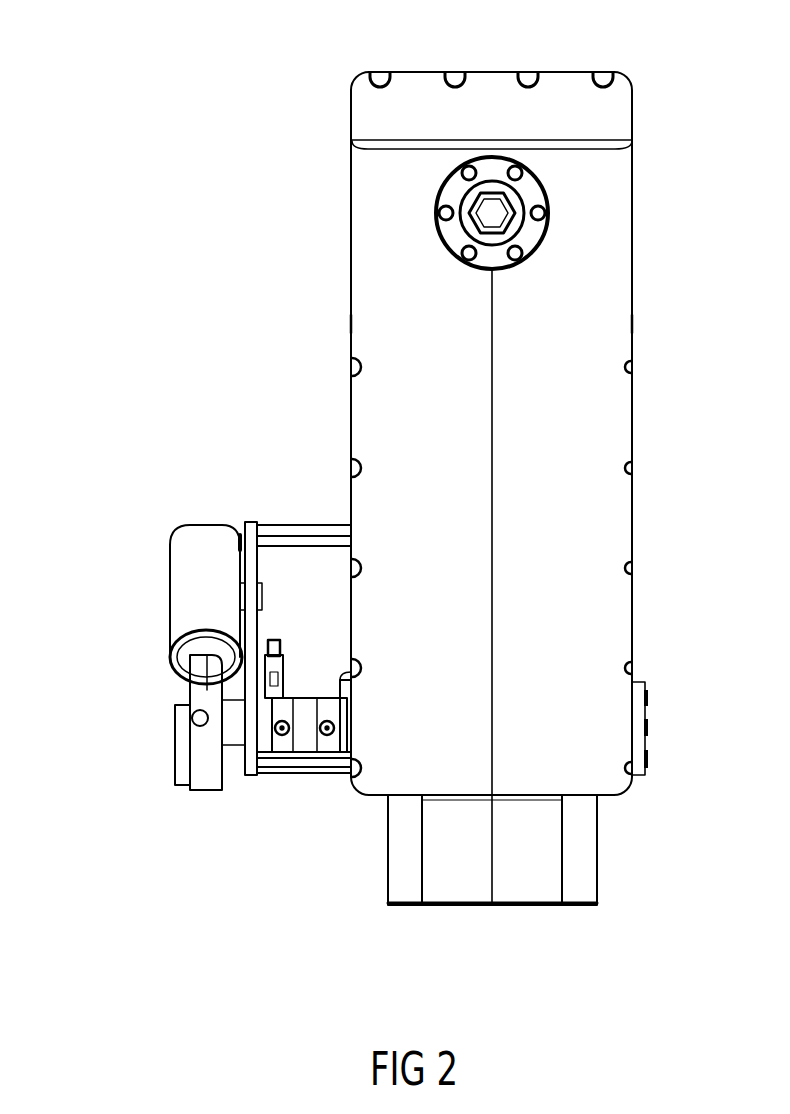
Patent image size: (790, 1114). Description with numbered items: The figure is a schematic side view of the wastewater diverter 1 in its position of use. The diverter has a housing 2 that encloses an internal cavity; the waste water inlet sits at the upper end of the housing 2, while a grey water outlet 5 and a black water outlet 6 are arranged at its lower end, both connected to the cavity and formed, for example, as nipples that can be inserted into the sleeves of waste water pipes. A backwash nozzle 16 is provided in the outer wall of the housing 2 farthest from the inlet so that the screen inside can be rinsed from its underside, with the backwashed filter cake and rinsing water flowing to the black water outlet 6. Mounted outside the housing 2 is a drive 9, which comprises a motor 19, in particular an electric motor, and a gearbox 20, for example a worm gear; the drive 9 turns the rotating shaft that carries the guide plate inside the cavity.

The wastewater diverter 1 is at (286, 58).
The housing 2 is at (368, 302).
The grey water outlet 5 is at (458, 878).
The black water outlet 6 is at (400, 848).
The drive 9 is at (144, 632).
The backwash nozzle 16 is at (548, 228).
The motor 19 is at (190, 570).
The gearbox 20 is at (195, 770).